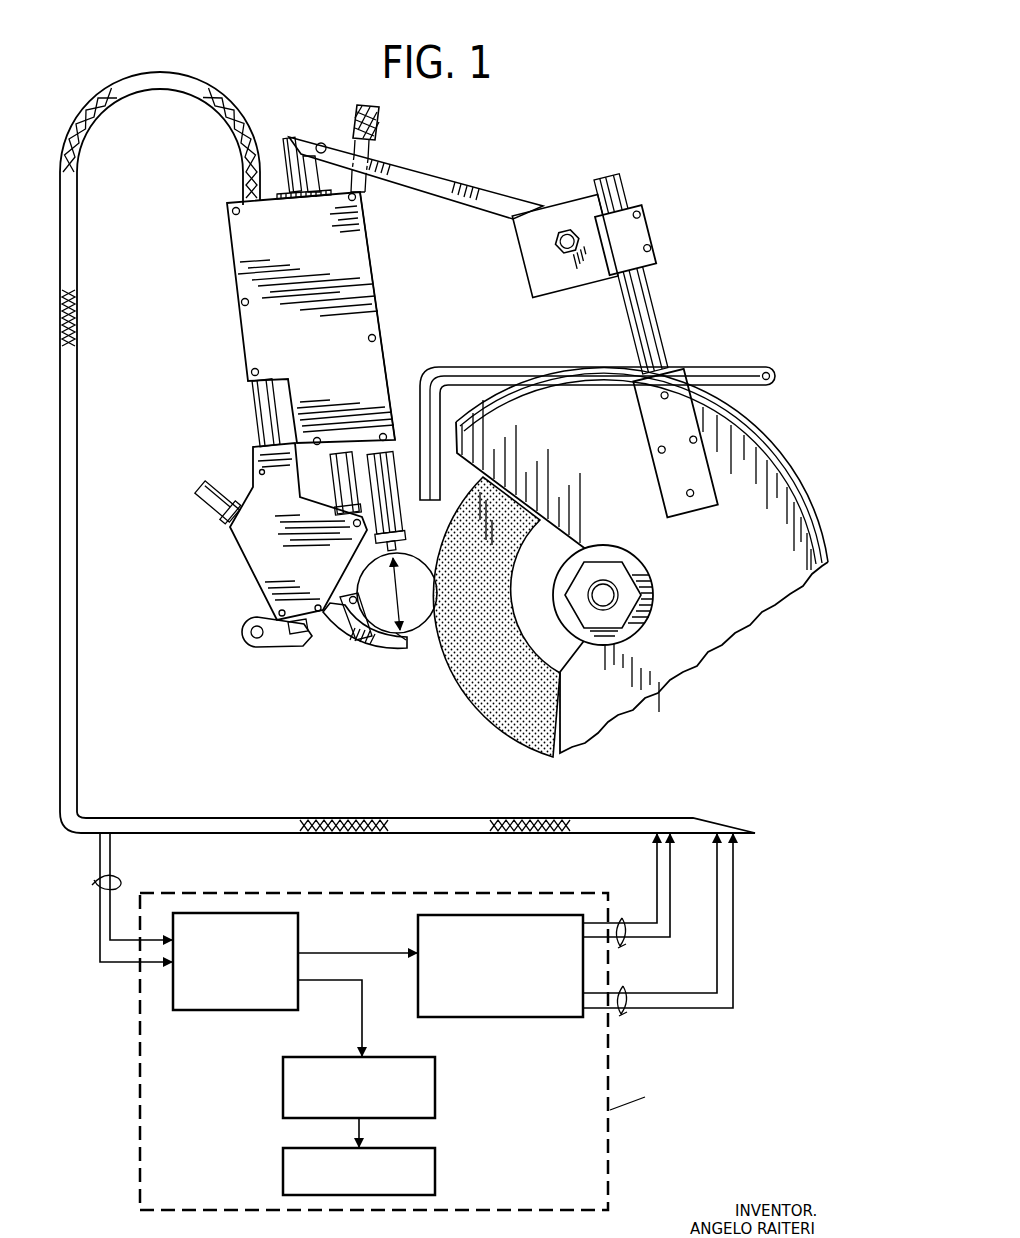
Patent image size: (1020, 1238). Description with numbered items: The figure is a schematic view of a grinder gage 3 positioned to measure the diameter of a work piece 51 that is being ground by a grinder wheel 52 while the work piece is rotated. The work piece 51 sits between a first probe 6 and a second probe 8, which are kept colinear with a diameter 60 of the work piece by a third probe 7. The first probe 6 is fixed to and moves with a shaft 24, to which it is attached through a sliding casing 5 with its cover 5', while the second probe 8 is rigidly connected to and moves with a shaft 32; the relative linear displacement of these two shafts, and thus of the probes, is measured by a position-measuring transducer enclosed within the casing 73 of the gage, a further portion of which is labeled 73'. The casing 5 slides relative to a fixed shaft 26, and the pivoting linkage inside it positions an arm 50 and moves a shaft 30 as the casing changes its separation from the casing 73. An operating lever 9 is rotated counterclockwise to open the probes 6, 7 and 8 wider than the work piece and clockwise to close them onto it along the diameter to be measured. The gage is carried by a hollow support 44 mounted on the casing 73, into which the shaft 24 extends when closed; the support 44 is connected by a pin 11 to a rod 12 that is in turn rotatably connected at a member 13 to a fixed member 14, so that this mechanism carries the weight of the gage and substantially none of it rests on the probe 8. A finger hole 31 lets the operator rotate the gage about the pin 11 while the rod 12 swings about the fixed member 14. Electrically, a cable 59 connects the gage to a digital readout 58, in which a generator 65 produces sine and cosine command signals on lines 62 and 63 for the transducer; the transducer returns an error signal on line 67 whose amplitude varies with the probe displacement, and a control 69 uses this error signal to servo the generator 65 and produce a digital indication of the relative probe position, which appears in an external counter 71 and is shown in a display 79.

The grinder gage 3 is at (188, 358).
The sliding casing 5 is at (283, 531).
The cover 5' is at (229, 488).
The first probe 6 is at (406, 639).
The third probe 7 is at (349, 592).
The second probe 8 is at (397, 593).
The operating lever 9 is at (381, 119).
The pin 11 is at (322, 143).
The rod 12 is at (443, 182).
The rotatable connection member 13 is at (552, 244).
The fixed member 14 is at (596, 270).
The shaft 24 is at (340, 483).
The fixed shaft 26 is at (262, 412).
The shaft 30 is at (349, 598).
The finger hole 31 is at (243, 633).
The shaft 32 is at (398, 541).
The hollow support member 44 is at (293, 140).
The arm 50 is at (376, 648).
The work piece 51 is at (358, 643).
The grinder wheel 52 is at (488, 712).
The digital readout 58 is at (140, 1063).
The cable 59 is at (206, 84).
The diameter 60 is at (397, 561).
The sine command line 62 is at (623, 920).
The cosine command line 63 is at (623, 986).
The sine/cosine generator 65 is at (502, 1019).
The error signal line 67 is at (92, 885).
The control 69 is at (208, 1012).
The external counter 71 is at (436, 1091).
The casing 73 is at (279, 318).
The housing side 73' is at (394, 316).
The display 79 is at (436, 1168).